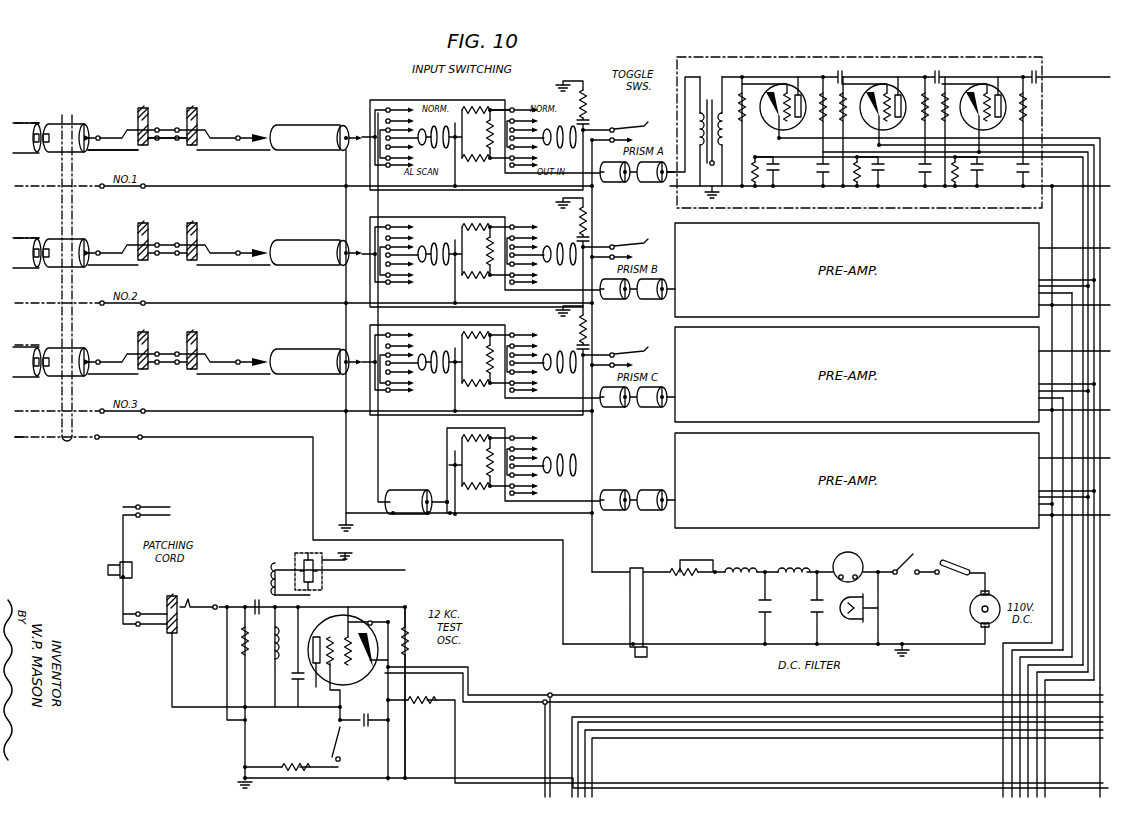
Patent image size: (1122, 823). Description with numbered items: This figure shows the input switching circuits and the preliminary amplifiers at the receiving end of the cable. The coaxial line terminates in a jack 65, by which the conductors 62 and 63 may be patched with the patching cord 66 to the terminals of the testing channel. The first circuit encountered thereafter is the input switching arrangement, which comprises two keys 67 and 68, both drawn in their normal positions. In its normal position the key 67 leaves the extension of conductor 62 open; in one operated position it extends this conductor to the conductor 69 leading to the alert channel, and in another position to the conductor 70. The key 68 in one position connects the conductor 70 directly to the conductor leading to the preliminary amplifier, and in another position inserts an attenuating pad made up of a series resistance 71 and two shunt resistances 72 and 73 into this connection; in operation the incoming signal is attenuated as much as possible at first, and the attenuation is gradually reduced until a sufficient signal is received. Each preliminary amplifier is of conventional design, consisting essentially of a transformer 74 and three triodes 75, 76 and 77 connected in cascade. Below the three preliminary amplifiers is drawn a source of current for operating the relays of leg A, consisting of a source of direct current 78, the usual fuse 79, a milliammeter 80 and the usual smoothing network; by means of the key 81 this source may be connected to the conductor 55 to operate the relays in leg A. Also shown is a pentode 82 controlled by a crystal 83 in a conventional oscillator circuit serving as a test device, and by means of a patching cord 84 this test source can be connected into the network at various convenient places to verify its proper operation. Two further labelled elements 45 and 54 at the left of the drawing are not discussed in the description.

The cable 45 is at (18, 445).
The conductor 54 is at (80, 440).
The conductor 55 is at (87, 188).
The conductor 62 is at (96, 127).
The conductor 63 is at (97, 151).
The jack 65 is at (144, 108).
The patching cord 66 is at (171, 130).
The key 67 is at (411, 125).
The key 68 is at (541, 122).
The conductor 69 is at (380, 202).
The conductor 70 is at (473, 95).
The series resistance 71 is at (503, 165).
The shunt resistance 72 is at (501, 93).
The shunt resistance 73 is at (476, 183).
The transformer 74 is at (712, 99).
The triode 75 is at (797, 84).
The triode 76 is at (895, 84).
The triode 77 is at (993, 84).
The source of direct current 78 is at (997, 597).
The fuse 79 is at (909, 562).
The milliammeter 80 is at (861, 559).
The key 81 is at (615, 123).
The pentode 82 is at (345, 616).
The crystal 83 is at (298, 556).
The patching cord 84 is at (122, 542).